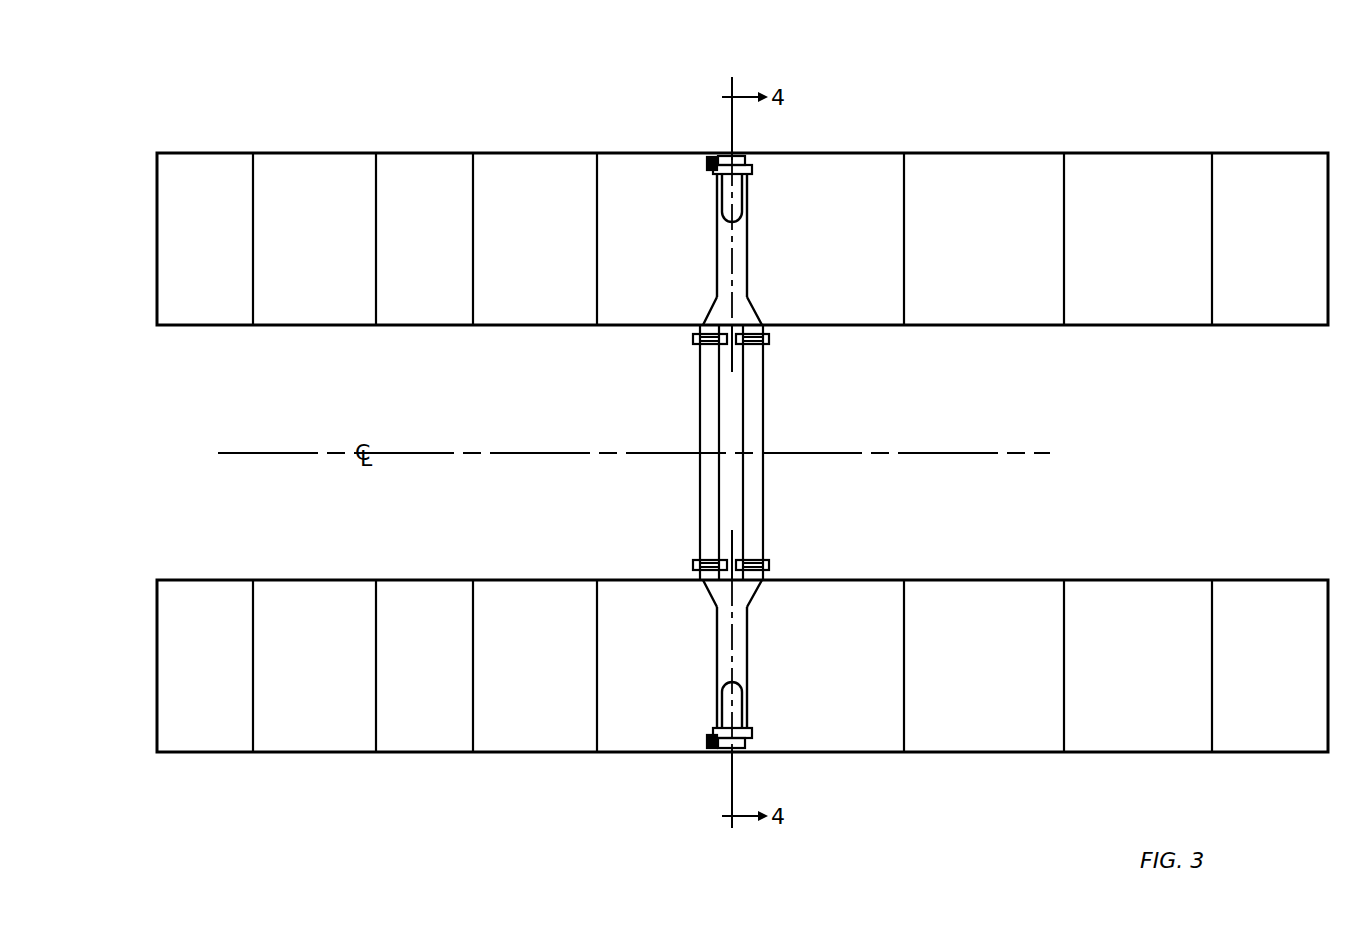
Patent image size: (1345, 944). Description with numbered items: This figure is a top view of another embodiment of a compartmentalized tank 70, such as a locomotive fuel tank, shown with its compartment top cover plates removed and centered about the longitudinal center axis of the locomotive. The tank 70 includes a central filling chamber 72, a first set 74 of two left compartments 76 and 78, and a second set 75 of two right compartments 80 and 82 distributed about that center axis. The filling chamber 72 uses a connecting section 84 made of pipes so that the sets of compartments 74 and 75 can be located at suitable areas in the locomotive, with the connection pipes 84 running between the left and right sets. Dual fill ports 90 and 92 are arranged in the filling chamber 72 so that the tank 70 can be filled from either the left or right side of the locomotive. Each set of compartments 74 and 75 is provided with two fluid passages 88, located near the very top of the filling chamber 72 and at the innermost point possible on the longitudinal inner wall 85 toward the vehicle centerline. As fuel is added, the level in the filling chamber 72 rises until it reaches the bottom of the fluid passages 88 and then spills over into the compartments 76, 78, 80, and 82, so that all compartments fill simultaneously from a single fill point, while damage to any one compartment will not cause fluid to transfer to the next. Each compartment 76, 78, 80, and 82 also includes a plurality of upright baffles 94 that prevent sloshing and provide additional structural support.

The tank 70 is at (378, 100).
The filling chamber 72 is at (722, 248).
The first set of two left compartments 74 is at (157, 154).
The second set of two right compartments 75 is at (157, 581).
The left compartment 76 is at (727, 143).
The left compartment 78 is at (1328, 147).
The right compartment 80 is at (727, 765).
The right compartment 82 is at (1328, 763).
The connecting section 84 is at (703, 505).
The longitudinal inner wall 85 is at (838, 327).
The fluid passages 88 is at (710, 306).
The fill port 90 is at (740, 160).
The fill port 92 is at (742, 762).
The upright baffles 94 is at (375, 310).